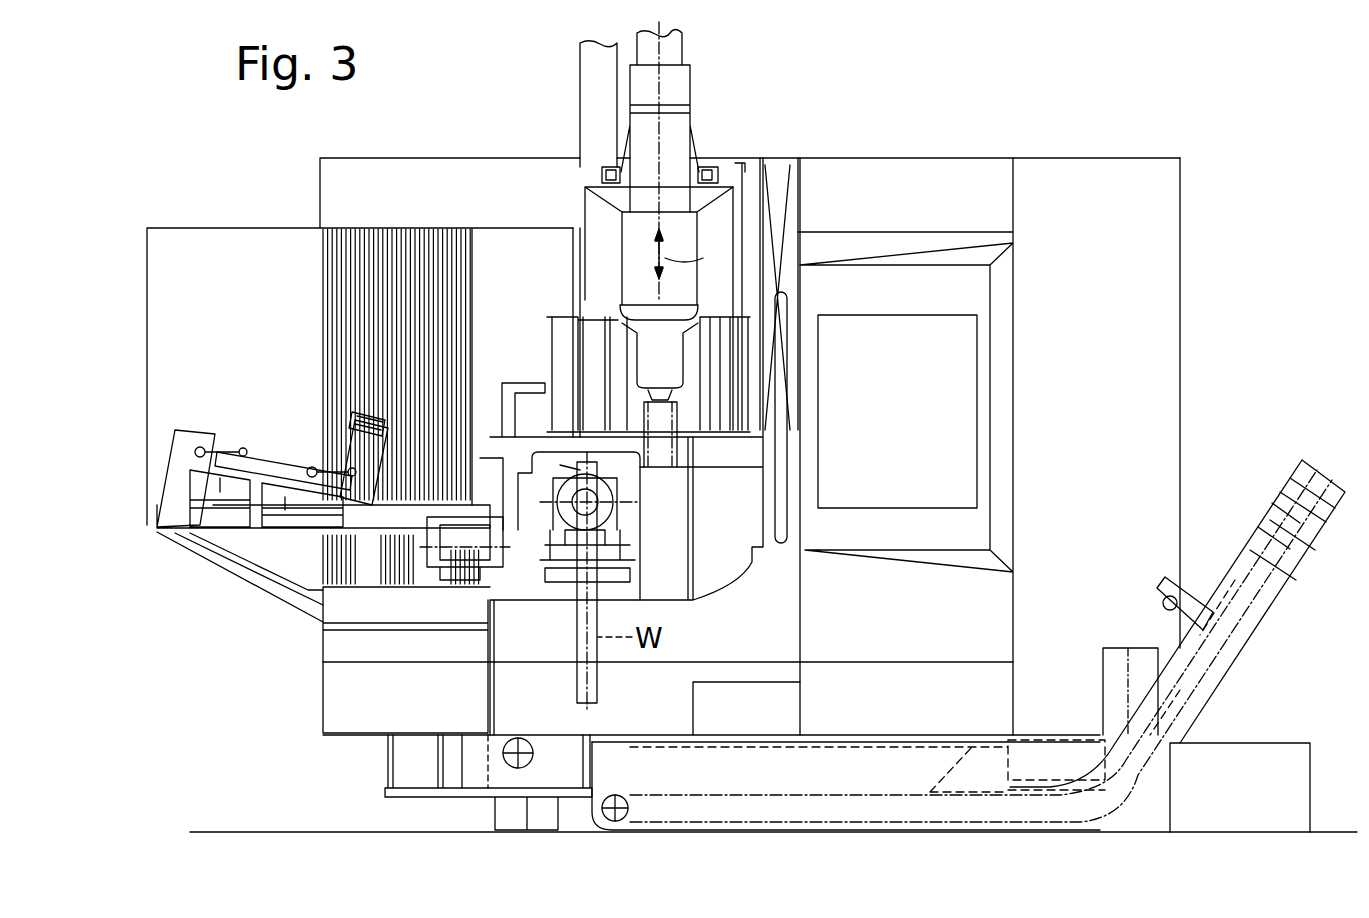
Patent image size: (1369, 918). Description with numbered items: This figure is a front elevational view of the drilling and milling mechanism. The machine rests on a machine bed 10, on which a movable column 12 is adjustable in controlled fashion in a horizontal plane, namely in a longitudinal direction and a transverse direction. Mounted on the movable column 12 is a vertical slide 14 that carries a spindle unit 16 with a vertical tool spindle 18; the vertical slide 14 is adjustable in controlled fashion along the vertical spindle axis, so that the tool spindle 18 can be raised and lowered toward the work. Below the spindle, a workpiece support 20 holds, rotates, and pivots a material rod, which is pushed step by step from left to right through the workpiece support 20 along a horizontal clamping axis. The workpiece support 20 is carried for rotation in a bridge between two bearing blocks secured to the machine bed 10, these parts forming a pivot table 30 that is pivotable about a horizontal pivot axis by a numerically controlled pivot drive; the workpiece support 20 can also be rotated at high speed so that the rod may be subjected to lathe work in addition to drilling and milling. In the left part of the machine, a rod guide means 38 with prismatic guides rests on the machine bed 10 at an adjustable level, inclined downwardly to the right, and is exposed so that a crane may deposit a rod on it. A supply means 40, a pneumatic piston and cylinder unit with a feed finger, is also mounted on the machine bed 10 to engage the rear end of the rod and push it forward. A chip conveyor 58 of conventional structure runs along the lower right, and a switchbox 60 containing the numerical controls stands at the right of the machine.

The machine bed 10 is at (340, 645).
The movable column 12 is at (741, 170).
The vertical slide 14 is at (718, 216).
The spindle unit 16 is at (633, 237).
The vertical tool spindle 18 is at (680, 394).
The workpiece support 20 is at (606, 497).
The pivot table 30 is at (600, 520).
The rod guide means 38 is at (262, 457).
The supply means 40 is at (160, 462).
The chip conveyor 58 is at (1207, 663).
The switchbox 60 is at (1088, 180).